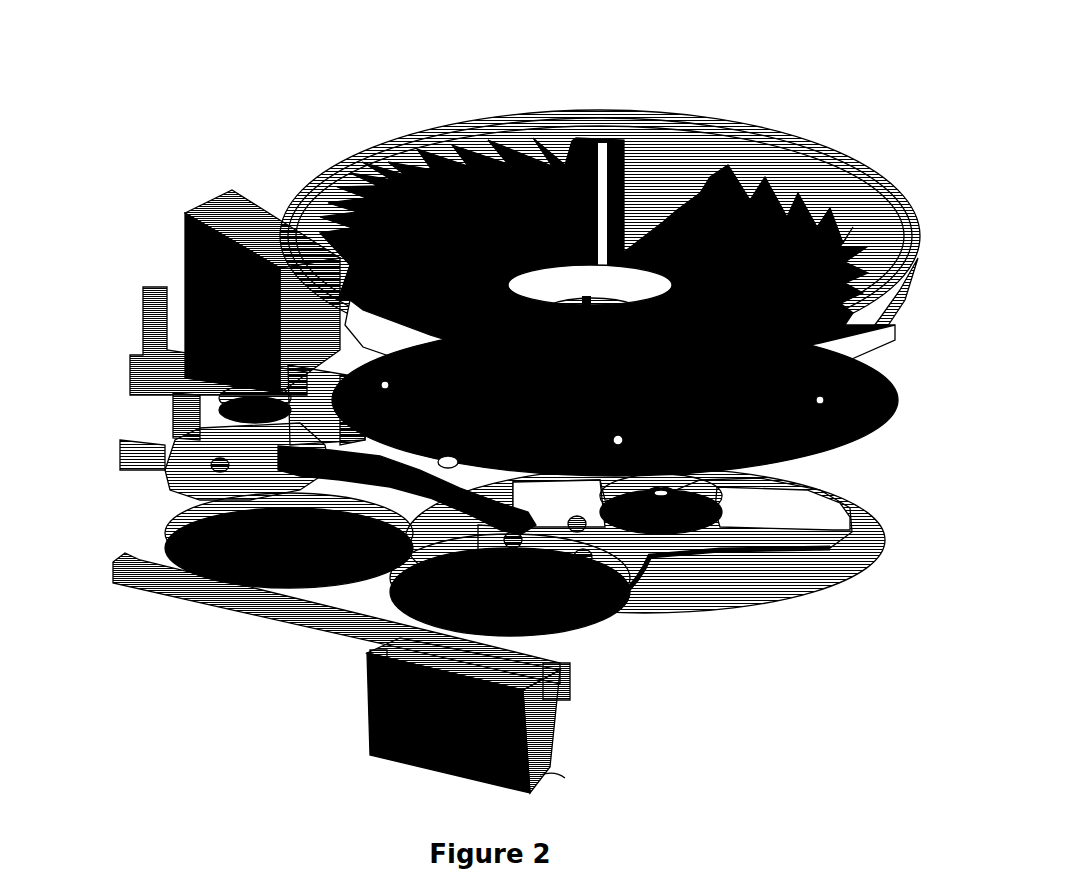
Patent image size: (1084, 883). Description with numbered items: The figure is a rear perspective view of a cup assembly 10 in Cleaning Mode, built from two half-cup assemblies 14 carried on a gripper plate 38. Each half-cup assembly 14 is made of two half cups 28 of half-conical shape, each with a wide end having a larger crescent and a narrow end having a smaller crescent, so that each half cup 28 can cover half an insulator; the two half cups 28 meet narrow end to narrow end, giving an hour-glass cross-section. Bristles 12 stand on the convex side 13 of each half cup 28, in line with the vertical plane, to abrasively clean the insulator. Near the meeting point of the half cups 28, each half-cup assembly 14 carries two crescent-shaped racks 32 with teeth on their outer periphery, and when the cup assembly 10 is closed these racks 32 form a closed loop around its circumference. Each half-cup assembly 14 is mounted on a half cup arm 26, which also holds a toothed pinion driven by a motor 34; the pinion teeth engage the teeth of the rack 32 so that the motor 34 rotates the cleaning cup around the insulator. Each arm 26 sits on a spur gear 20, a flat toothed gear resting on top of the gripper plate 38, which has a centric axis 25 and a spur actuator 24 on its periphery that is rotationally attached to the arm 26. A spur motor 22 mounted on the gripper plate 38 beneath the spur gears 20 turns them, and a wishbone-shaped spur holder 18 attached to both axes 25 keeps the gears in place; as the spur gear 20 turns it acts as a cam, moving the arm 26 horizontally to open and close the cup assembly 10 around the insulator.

The cup assembly 10 is at (808, 130).
The bristles 12 is at (395, 140).
The convex side 13 is at (607, 262).
The half-cup assembly 14 is at (637, 287).
The spur holder 18 is at (323, 490).
The spur gear 20 is at (190, 528).
The spur motor 22 is at (397, 708).
The spur actuator 24 is at (588, 562).
The centric axis 25 is at (514, 548).
The half cup arm 26 is at (183, 455).
The half cup 28 is at (893, 238).
The rack 32 is at (880, 452).
The motor 34 is at (205, 232).
The gripper plate 38 is at (160, 565).